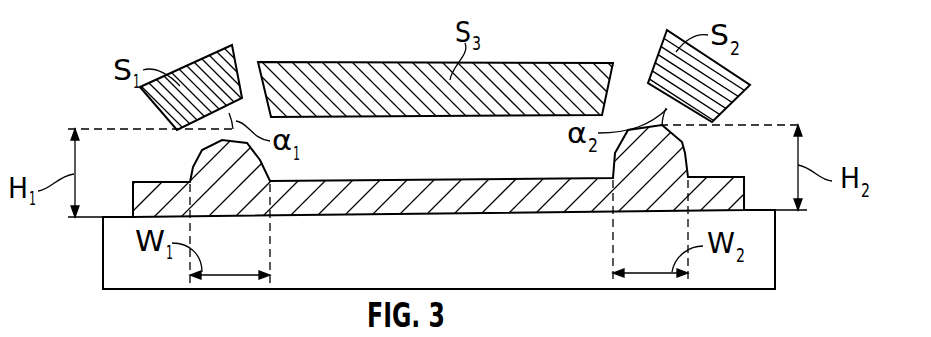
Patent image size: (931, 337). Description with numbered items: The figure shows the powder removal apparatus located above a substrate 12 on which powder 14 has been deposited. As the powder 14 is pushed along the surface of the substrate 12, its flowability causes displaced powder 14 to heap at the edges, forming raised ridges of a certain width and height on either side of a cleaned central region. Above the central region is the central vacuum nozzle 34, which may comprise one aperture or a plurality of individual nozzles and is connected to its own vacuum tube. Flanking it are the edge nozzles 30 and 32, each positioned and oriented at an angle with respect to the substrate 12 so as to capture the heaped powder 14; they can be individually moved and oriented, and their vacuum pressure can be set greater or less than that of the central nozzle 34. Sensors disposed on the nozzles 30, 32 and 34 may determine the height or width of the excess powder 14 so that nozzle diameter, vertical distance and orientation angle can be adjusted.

The substrate 12 is at (552, 266).
The powder 14 is at (520, 196).
The edge nozzle 30 is at (219, 52).
The edge nozzle 32 is at (732, 67).
The central nozzle 34 is at (563, 63).